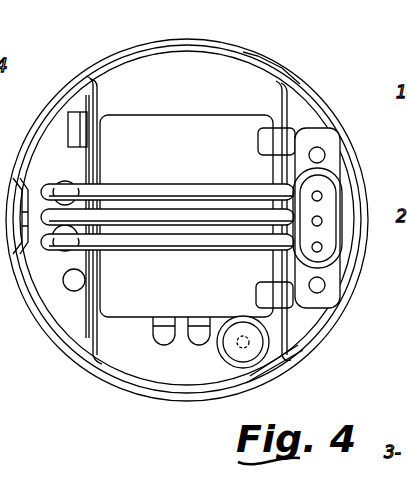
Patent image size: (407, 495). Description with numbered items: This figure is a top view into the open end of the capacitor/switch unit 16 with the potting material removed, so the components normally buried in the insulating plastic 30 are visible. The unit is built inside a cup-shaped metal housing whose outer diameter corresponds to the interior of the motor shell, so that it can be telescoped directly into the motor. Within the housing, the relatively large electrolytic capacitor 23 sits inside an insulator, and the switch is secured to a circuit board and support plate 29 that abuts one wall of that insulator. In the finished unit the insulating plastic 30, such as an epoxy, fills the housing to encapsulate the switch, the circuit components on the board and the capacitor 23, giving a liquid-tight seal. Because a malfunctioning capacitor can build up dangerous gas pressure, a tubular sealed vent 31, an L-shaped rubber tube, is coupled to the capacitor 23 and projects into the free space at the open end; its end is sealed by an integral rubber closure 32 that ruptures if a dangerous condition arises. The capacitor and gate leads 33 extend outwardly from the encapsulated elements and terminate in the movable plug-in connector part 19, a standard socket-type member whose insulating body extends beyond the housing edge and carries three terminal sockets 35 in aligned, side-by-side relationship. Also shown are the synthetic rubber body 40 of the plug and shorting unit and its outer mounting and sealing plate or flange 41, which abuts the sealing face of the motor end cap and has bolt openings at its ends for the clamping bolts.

The capacitor/switch unit 16 is at (306, 85).
The plug-in type connector part 19 is at (319, 312).
The electrolytic capacitor 23 is at (182, 115).
The circuit board and support plate 29 is at (122, 367).
The insulating plastic 30 is at (82, 298).
The tubular sealed vent 31 is at (222, 362).
The rubber closure 32 is at (242, 340).
The capacitor and gate leads 33 is at (172, 184).
The terminal sockets 35 is at (323, 244).
The synthetic rubber body 40 is at (282, 271).
The mounting and sealing plate or flange 41 is at (334, 284).